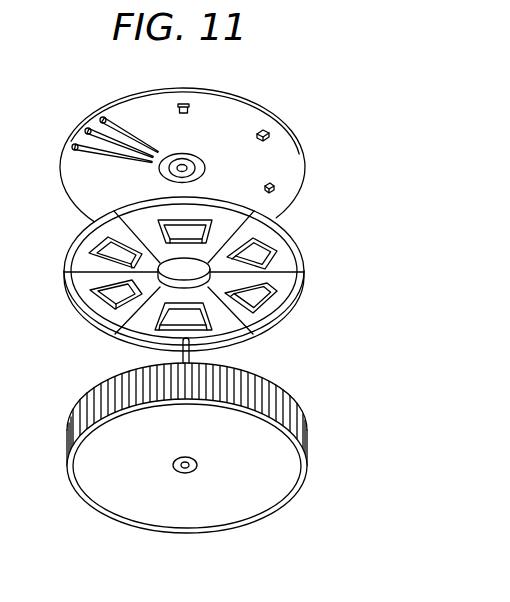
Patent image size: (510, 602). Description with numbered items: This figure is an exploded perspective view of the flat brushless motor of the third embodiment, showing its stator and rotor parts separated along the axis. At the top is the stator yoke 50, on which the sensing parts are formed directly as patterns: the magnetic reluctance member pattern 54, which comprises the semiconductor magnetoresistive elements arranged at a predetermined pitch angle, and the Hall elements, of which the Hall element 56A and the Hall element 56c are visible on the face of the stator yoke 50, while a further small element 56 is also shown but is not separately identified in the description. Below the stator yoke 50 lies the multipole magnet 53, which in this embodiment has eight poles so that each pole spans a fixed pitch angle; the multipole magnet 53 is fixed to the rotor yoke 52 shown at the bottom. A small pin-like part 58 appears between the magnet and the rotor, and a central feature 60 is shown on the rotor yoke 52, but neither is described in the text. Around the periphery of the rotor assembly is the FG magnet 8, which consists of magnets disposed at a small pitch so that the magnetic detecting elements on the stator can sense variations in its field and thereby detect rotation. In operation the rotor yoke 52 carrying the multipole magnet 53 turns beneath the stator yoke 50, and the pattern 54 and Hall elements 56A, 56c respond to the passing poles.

The stator yoke 50 is at (252, 100).
The magnetic reluctance member pattern 54 is at (80, 144).
The Hall element 56c is at (185, 105).
The Hall element 56A is at (268, 132).
The contact piece 56 is at (273, 188).
The multipole magnet 53 is at (297, 238).
The pin 58 is at (190, 355).
The FG magnet 8 is at (307, 426).
The rotor yoke 52 is at (288, 477).
The center hole 60 is at (197, 465).